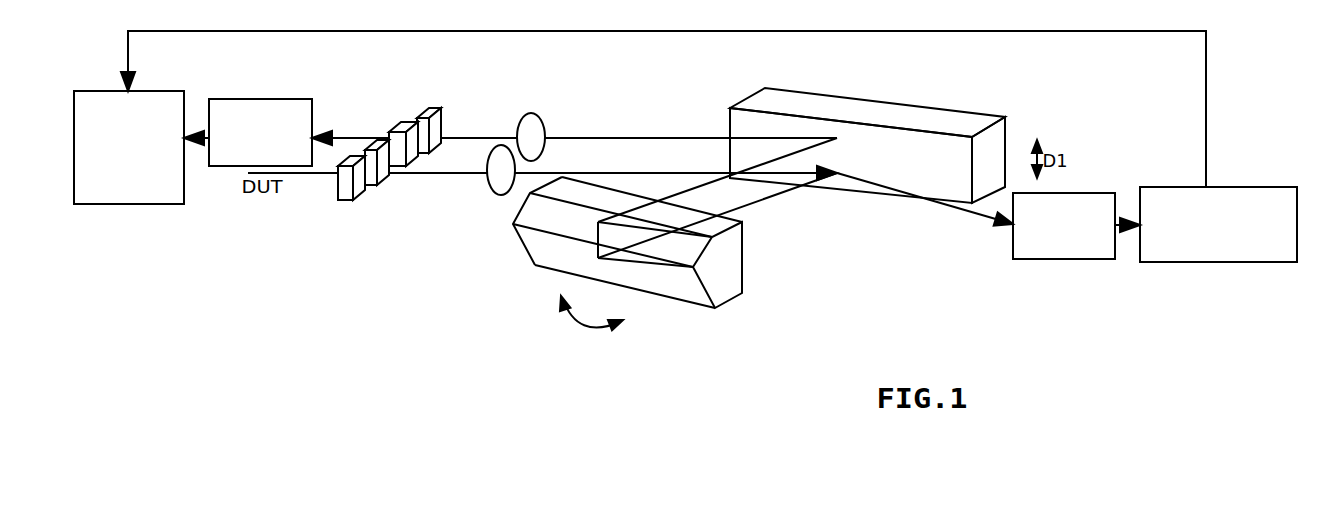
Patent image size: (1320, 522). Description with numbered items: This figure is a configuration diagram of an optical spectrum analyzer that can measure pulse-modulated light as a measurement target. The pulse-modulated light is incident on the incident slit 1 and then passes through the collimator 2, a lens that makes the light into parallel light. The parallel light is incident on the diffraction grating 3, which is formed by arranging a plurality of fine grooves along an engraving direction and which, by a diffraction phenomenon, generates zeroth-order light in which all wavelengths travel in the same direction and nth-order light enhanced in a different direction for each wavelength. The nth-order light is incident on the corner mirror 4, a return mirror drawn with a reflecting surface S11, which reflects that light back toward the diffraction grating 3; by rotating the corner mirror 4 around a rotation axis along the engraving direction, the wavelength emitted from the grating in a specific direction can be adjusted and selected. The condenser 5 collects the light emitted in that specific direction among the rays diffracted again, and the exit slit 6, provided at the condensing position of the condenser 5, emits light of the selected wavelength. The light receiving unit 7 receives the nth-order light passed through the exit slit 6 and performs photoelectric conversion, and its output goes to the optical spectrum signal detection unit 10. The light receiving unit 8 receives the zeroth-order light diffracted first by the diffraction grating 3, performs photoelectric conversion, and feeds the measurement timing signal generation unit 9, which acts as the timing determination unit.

The incident slit 1 is at (353, 201).
The collimator 2 is at (488, 192).
The diffraction grating 3 is at (948, 107).
The corner mirror 4 is at (536, 238).
The condenser 5 is at (541, 114).
The exit slit 6 is at (432, 114).
The light receiving unit 7 is at (305, 98).
The light receiving unit 8 is at (1097, 186).
The measurement timing signal generation unit 9 is at (1228, 185).
The optical spectrum signal detection unit 10 is at (174, 90).
The reflecting surface of prism S11 is at (687, 248).